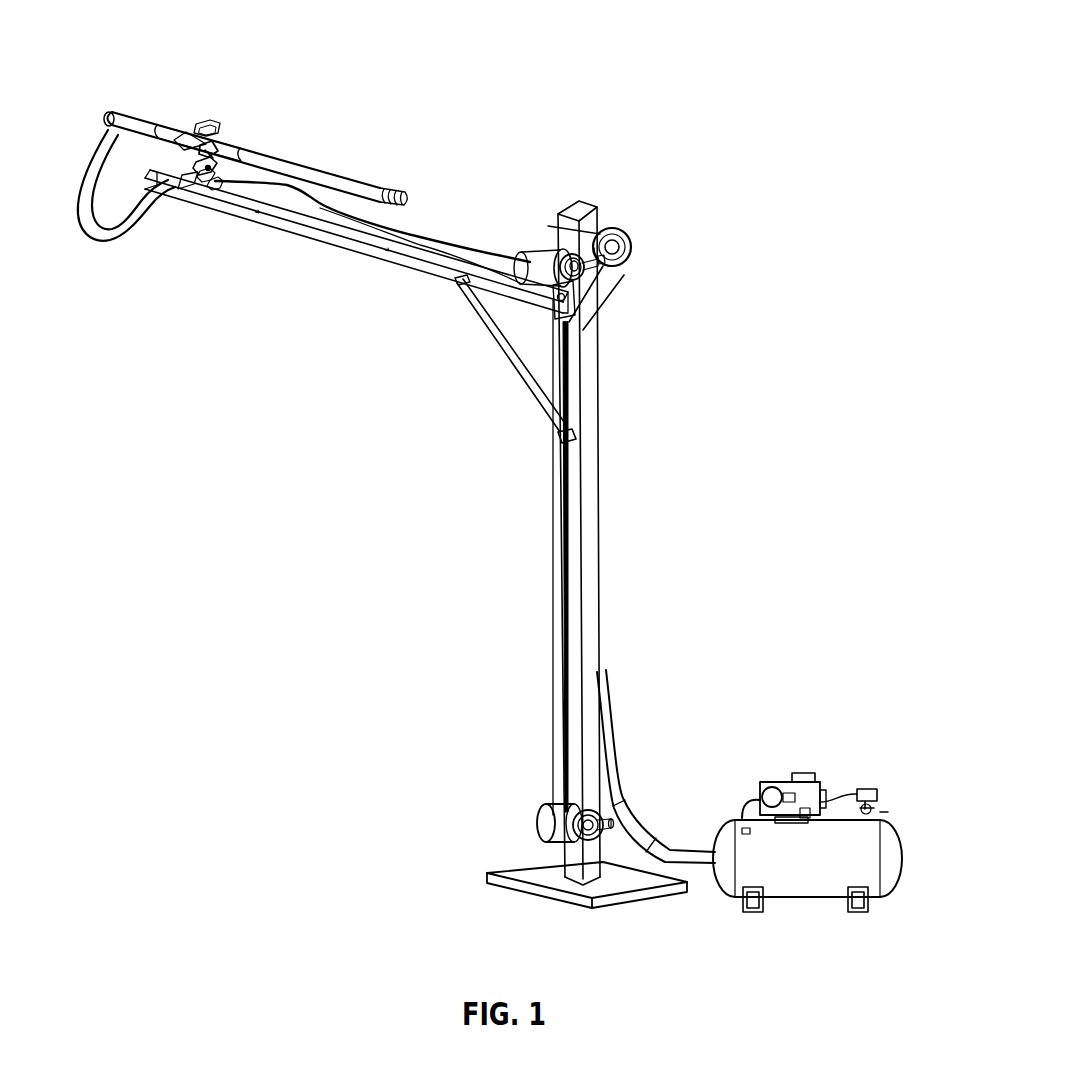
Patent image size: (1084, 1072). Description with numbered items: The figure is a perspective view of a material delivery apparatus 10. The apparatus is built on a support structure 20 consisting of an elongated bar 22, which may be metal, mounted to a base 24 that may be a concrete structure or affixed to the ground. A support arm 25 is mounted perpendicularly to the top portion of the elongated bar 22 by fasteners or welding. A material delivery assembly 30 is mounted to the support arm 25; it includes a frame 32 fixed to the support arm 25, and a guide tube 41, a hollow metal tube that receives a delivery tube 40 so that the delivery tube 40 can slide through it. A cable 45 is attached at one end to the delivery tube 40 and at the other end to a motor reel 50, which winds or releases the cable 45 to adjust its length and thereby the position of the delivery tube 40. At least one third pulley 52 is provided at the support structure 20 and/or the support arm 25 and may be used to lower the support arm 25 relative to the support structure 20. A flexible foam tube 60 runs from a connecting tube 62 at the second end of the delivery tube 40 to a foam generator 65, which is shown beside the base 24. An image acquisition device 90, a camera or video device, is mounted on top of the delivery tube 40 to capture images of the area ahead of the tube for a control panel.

The material delivery apparatus 10 is at (716, 146).
The support structure 20 is at (523, 714).
The elongated bar 22 is at (558, 557).
The base 24 is at (513, 863).
The support arm 25 is at (413, 264).
The material delivery assembly 30 is at (293, 90).
The frame 32 is at (190, 186).
The delivery tube 40 is at (345, 203).
The guide tube 41 is at (176, 128).
The cable 45 is at (440, 230).
The motor reel 50 is at (553, 810).
The third pulley 52 is at (550, 258).
The foam tube 60 is at (113, 228).
The connecting tube 62 is at (110, 113).
The foam generator 65 is at (853, 787).
The image acquisition device 90 is at (207, 122).